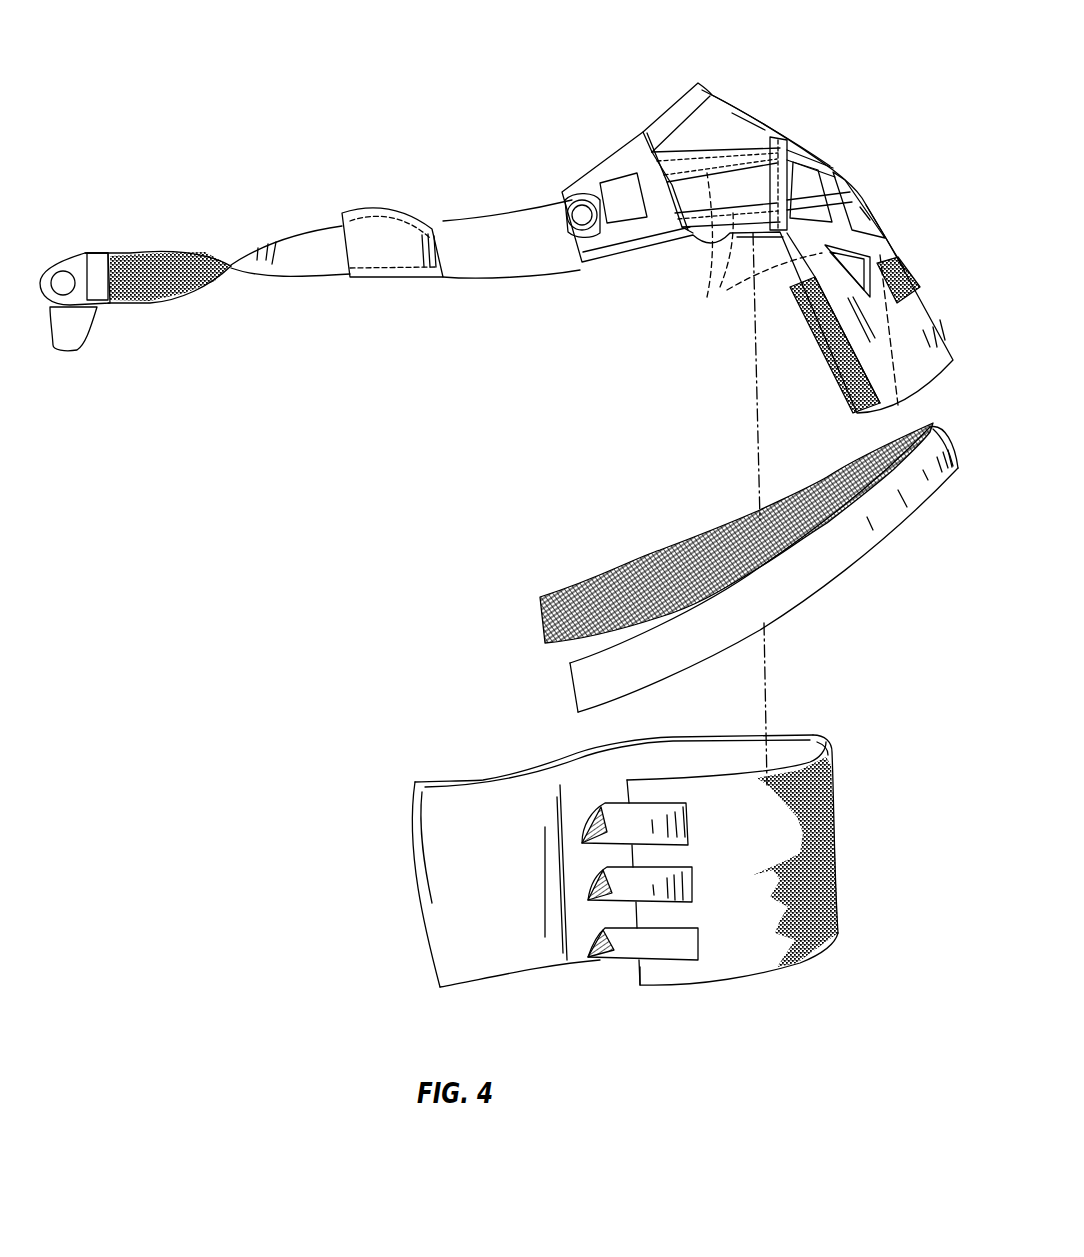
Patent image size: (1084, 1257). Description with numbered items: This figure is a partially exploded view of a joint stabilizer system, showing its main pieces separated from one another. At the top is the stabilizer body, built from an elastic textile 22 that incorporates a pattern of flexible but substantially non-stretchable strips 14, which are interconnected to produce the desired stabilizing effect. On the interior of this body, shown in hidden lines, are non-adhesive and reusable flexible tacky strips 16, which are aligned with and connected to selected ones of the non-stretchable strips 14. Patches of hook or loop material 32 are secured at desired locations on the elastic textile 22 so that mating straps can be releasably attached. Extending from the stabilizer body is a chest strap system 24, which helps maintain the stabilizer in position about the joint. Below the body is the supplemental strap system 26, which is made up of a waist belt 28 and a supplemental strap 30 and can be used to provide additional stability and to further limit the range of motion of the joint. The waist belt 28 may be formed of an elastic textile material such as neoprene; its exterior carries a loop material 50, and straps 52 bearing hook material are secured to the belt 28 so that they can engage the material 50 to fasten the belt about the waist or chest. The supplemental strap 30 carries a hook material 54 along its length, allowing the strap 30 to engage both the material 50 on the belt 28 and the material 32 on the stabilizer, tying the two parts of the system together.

The non-stretchable strips 14 is at (745, 217).
The tacky strips 16 is at (707, 297).
The elastic textile 22 is at (707, 144).
The chest strap system 24 is at (361, 178).
The supplemental strap system 26 is at (401, 655).
The waist belt 28 is at (542, 780).
The supplemental strap 30 is at (803, 577).
The hook or loop material 32 is at (913, 277).
The loop material 50 is at (830, 820).
The straps 52 is at (617, 950).
The hook material 54 is at (633, 583).